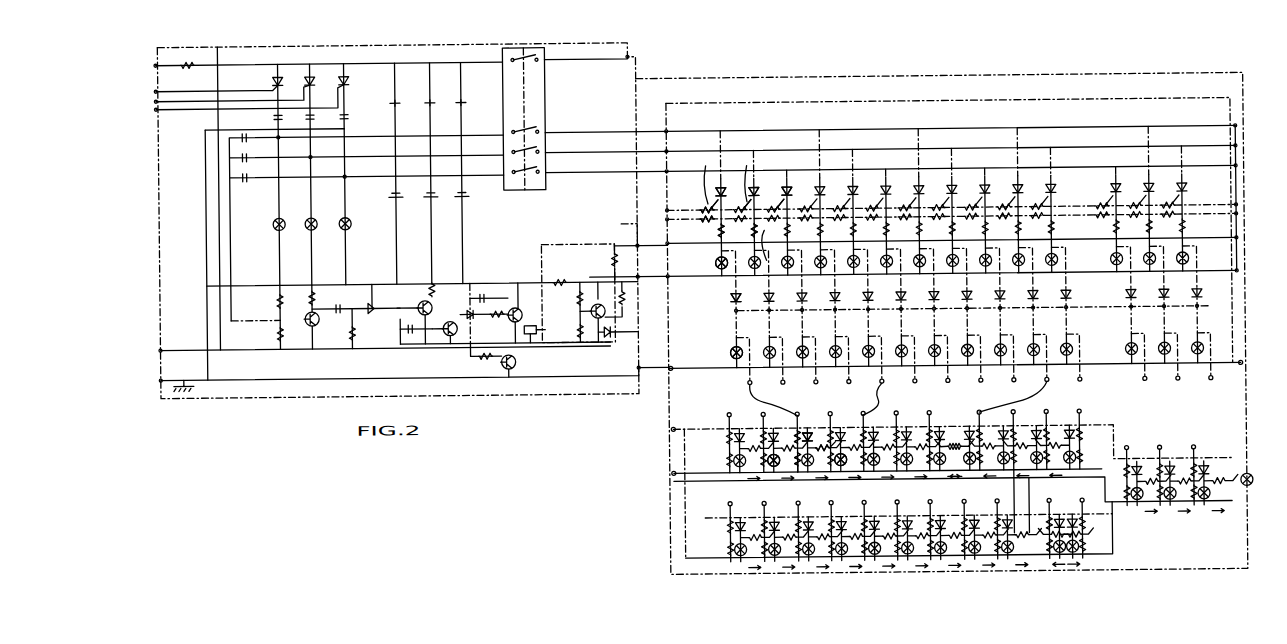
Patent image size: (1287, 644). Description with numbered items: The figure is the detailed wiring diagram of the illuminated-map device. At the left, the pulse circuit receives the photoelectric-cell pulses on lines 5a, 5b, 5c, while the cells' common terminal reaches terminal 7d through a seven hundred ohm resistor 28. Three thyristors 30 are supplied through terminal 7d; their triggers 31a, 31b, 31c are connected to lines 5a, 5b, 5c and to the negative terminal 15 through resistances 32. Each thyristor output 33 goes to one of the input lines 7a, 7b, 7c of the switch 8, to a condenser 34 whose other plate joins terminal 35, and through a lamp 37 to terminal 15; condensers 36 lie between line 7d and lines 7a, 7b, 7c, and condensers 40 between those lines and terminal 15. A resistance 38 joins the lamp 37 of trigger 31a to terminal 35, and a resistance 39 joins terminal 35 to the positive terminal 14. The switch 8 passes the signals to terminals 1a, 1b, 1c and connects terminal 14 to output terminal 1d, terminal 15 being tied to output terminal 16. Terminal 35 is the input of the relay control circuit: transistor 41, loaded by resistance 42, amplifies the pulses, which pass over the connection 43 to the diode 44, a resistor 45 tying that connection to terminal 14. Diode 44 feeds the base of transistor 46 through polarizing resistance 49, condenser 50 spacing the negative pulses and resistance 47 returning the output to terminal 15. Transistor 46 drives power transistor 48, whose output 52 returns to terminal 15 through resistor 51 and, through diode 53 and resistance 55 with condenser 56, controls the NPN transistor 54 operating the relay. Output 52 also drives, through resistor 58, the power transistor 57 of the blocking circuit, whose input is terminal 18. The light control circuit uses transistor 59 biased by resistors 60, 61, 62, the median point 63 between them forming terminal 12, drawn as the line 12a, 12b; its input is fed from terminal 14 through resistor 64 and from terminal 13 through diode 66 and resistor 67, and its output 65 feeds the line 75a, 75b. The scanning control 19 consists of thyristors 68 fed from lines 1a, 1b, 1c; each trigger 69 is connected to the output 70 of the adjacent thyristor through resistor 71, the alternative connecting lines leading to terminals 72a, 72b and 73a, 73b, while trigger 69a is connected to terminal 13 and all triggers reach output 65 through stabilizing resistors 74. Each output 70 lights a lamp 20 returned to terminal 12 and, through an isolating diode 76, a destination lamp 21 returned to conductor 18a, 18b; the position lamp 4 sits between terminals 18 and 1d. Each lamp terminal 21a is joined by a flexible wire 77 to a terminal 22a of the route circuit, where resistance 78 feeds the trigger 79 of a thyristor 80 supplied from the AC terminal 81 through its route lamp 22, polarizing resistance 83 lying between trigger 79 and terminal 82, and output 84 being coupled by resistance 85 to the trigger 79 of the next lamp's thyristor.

The line terminal 1a is at (630, 130).
The line terminal 1b is at (630, 149).
The line terminal 1c is at (630, 169).
The output terminal 1d is at (628, 58).
The position lamp 4 is at (1238, 492).
The line 5a is at (188, 88).
The line 5b is at (186, 100).
The line 5c is at (194, 108).
The input line of switch 7a is at (496, 133).
The input line of switch 7b is at (496, 153).
The input line of switch 7c is at (496, 173).
The terminal 7d is at (219, 190).
The switch 8 is at (542, 50).
The terminal 12 is at (639, 278).
The common line terminal 12a is at (937, 282).
The common line end 12b is at (1237, 275).
The terminal 13 is at (634, 226).
The positive terminal 14 is at (160, 347).
The negative terminal 15 is at (160, 377).
The output terminal 16 is at (638, 248).
The terminal 18 is at (636, 368).
The conductor 18a is at (672, 366).
The conductor 18b is at (1246, 367).
The scanning control circuit 19 is at (539, 334).
The lamp 20 is at (718, 260).
The destination lamp 21 is at (732, 350).
The terminal 21a is at (773, 391).
The route lamp 22 is at (796, 472).
The terminal 22a is at (921, 397).
The resistor 28 is at (188, 58).
The thyristor 30 is at (346, 74).
The trigger 31a is at (274, 87).
The trigger 31b is at (296, 89).
The trigger 31c is at (331, 94).
The resistance 32 is at (276, 115).
The thyristor output 33 is at (322, 164).
The condenser 34 is at (367, 226).
The terminal 35 is at (276, 318).
The condenser 36 is at (416, 173).
The lamp 37 is at (319, 207).
The resistance 38 is at (282, 294).
The resistance 39 is at (278, 340).
The condenser 40 is at (430, 187).
The transistor 41 is at (308, 312).
The resistance 42 is at (314, 294).
The connection 43 is at (336, 306).
The diode 44 is at (373, 296).
The resistor 45 is at (352, 344).
The transistor 46 is at (423, 294).
The polarizing resistance 47 is at (434, 290).
The power transistor 48 is at (442, 335).
The polarizing resistance 49 is at (415, 322).
The condenser 50 is at (400, 331).
The resistor 51 is at (470, 292).
The output 52 is at (485, 298).
The diode 53 is at (474, 318).
The transistor 54 is at (518, 299).
The resistance 55 is at (512, 316).
The condenser 56 is at (498, 299).
The power transistor 57 is at (510, 364).
The resistor 58 is at (484, 356).
The transistor 59 is at (593, 315).
The resistor 60 is at (580, 342).
The resistor 61 is at (571, 297).
The resistor 62 is at (560, 282).
The median point 63 is at (580, 282).
The resistor 64 is at (610, 334).
The output 65 is at (608, 244).
The diode 66 is at (622, 300).
The resistor 67 is at (608, 271).
The thyristor 68 is at (761, 185).
The trigger 69 is at (766, 193).
The trigger 69a is at (700, 178).
The thyristor output 70 is at (761, 214).
The resistor 71 is at (773, 229).
The terminal 72a is at (672, 208).
The terminal 72b is at (1238, 209).
The terminal 73a is at (670, 217).
The terminal 73b is at (1238, 218).
The voltage stabilizing resistor 74 is at (759, 236).
The line 75a is at (951, 248).
The line 75b is at (1238, 242).
The isolating diode 76 is at (739, 296).
The flexible wire 77 is at (826, 399).
The resistance 78 is at (794, 440).
The trigger 79 is at (816, 462).
The thyristor 80 is at (809, 430).
The terminal 81 is at (674, 428).
The terminal 82 is at (674, 472).
The polarizing resistance 83 is at (794, 474).
The output 84 is at (822, 450).
The resistance 85 is at (824, 448).